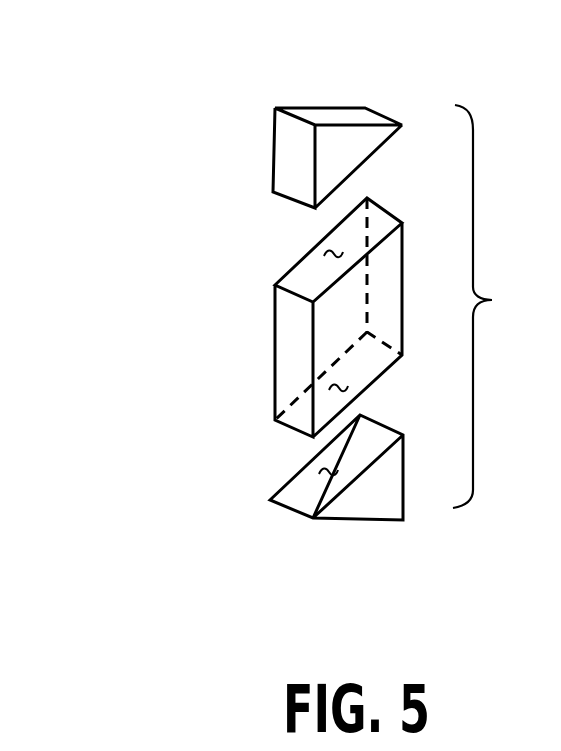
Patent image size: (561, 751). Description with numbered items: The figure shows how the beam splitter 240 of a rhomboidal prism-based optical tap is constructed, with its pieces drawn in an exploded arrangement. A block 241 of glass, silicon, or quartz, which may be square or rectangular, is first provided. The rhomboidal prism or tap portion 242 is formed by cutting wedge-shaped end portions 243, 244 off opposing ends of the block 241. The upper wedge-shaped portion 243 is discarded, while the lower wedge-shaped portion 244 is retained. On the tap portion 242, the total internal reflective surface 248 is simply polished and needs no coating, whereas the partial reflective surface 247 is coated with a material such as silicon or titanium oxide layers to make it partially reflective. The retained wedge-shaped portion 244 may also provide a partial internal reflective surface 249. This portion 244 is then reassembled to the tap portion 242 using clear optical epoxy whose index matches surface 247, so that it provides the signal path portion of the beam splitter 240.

The beam splitter 240 is at (257, 354).
The block 241 is at (503, 306).
The tap portion 242 is at (278, 385).
The wedge-shaped end portion 243 is at (282, 147).
The wedge-shaped end portion 244 is at (290, 512).
The partial reflective surface 247 is at (345, 383).
The total internal reflective surface 248 is at (327, 262).
The partial internal reflective surface 249 is at (322, 475).